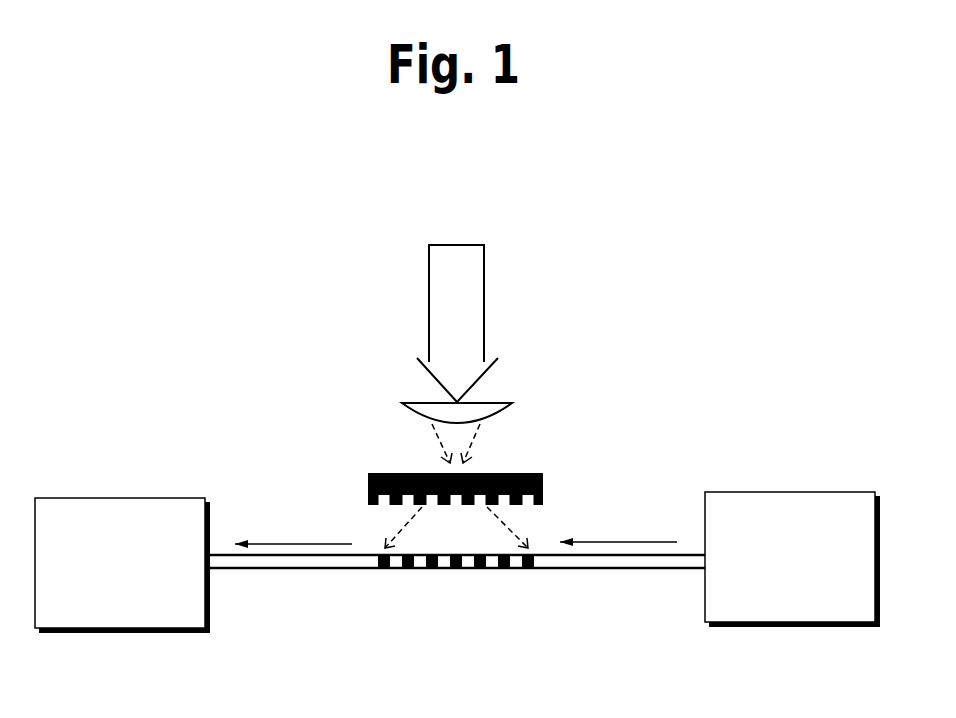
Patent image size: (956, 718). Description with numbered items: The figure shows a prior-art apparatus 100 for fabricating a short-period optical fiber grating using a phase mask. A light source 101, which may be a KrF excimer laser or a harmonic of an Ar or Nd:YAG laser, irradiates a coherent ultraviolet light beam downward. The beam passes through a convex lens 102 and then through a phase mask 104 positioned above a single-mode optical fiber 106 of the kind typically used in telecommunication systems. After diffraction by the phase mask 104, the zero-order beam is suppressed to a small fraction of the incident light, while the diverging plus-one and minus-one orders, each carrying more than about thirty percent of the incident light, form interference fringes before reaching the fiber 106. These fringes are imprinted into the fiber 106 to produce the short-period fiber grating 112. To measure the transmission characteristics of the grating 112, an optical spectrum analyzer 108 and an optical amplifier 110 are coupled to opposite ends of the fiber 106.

The apparatus 100 is at (155, 312).
The light source 101 is at (484, 300).
The convex lens 102 is at (512, 404).
The phase mask 104 is at (543, 473).
The single-mode optical fiber 106 is at (292, 570).
The optical spectrum analyzer 108 is at (117, 633).
The optical amplifier 110 is at (785, 627).
The short-period fiber grating 112 is at (535, 578).